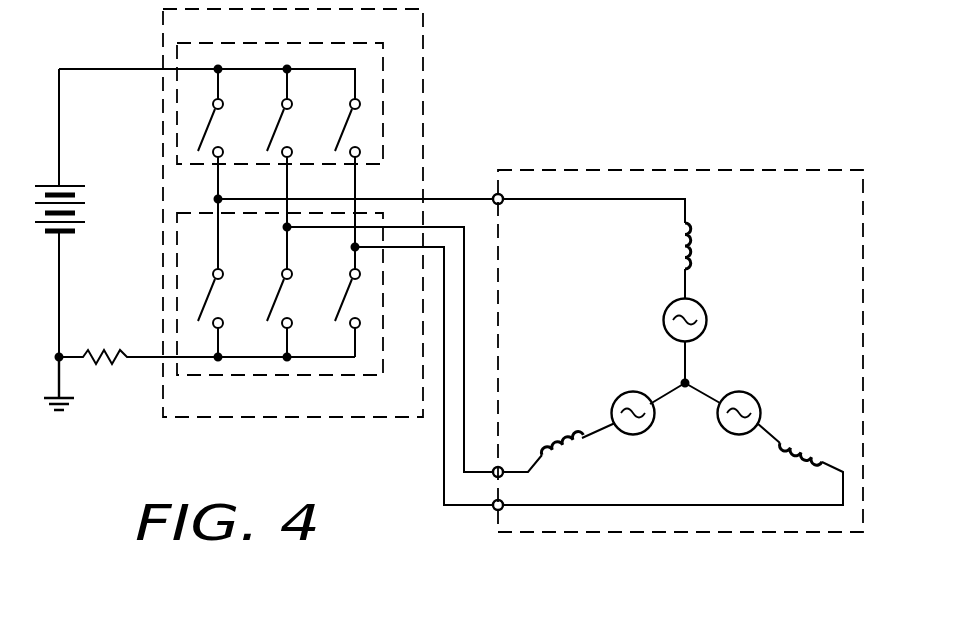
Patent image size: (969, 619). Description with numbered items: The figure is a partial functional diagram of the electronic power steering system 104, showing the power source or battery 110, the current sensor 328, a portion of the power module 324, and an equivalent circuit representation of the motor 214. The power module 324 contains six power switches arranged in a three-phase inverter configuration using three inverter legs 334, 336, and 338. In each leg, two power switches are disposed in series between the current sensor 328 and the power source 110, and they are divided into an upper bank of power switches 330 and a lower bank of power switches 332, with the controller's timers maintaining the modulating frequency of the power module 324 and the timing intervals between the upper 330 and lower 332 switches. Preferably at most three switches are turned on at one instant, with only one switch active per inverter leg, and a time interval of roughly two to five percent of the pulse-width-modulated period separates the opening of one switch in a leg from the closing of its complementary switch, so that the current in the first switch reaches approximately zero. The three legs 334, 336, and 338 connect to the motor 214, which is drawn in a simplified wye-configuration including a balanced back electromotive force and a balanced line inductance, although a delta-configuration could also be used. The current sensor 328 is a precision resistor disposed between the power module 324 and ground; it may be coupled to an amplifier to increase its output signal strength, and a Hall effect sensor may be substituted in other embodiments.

The electronic power steering system 104 is at (534, 103).
The power source 110 is at (78, 186).
The motor 214 is at (760, 170).
The power module 324 is at (424, 82).
The current sensor 328 is at (110, 350).
The upper power switches 330 is at (245, 42).
The lower power switches 332 is at (250, 377).
The inverter leg 334 is at (355, 176).
The inverter leg 336 is at (287, 176).
The inverter leg 338 is at (218, 176).